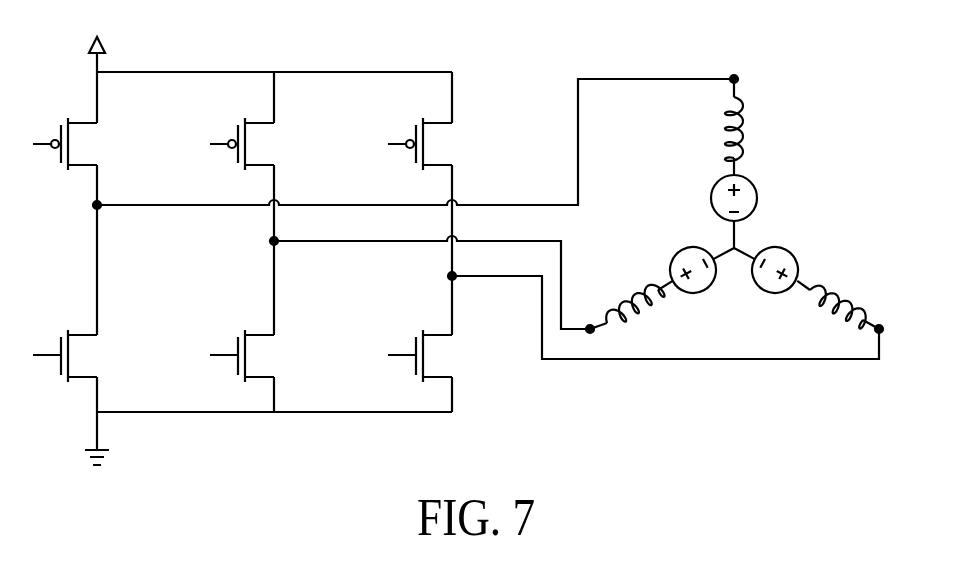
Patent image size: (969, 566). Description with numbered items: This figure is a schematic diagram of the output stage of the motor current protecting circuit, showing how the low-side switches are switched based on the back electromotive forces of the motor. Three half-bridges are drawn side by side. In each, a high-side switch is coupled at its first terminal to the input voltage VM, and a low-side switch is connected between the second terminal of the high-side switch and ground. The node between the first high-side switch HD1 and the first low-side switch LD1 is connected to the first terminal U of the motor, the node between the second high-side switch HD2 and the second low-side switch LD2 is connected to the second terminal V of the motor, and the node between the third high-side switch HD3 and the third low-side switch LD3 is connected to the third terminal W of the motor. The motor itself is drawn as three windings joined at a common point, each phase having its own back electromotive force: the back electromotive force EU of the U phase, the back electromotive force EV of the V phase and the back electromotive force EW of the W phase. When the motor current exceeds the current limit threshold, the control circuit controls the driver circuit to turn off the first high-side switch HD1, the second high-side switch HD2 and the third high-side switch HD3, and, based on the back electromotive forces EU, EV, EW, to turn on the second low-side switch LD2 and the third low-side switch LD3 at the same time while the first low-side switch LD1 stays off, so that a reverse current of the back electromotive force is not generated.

The input voltage VM is at (96, 38).
The first high-side switch HD1 is at (88, 126).
The second high-side switch HD2 is at (266, 126).
The third high-side switch HD3 is at (444, 126).
The first low-side switch LD1 is at (88, 338).
The second low-side switch LD2 is at (265, 338).
The third low-side switch LD3 is at (441, 338).
The first terminal of the motor U is at (405, 131).
The second terminal of the motor V is at (418, 279).
The third terminal of the motor W is at (664, 310).
The back electromotive force of the U phase EU is at (750, 169).
The back electromotive force of the V phase EV is at (657, 275).
The back electromotive force of the W phase EW is at (811, 274).